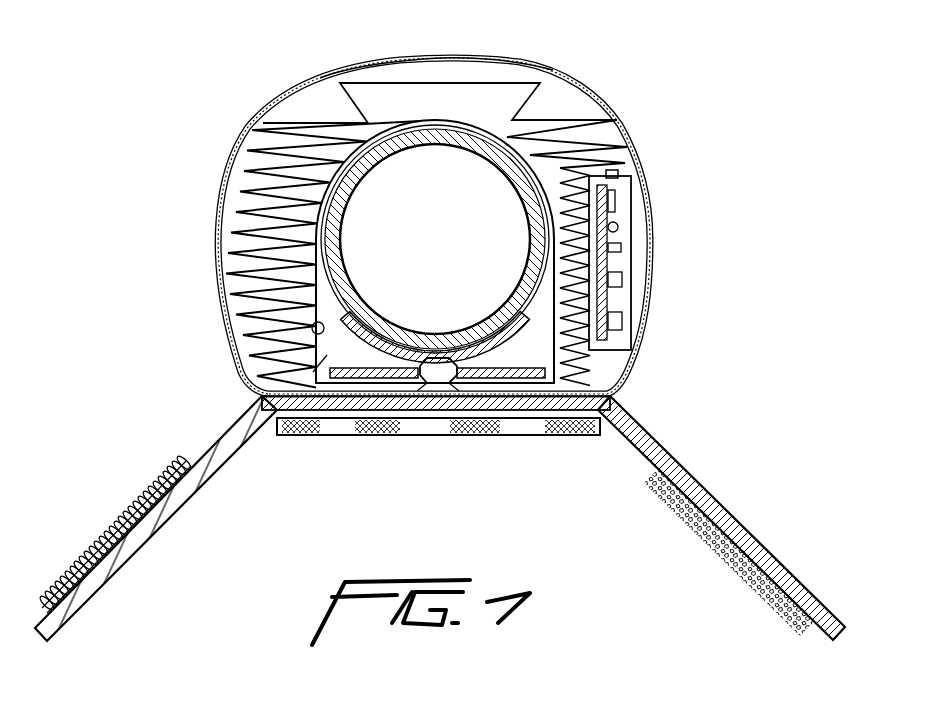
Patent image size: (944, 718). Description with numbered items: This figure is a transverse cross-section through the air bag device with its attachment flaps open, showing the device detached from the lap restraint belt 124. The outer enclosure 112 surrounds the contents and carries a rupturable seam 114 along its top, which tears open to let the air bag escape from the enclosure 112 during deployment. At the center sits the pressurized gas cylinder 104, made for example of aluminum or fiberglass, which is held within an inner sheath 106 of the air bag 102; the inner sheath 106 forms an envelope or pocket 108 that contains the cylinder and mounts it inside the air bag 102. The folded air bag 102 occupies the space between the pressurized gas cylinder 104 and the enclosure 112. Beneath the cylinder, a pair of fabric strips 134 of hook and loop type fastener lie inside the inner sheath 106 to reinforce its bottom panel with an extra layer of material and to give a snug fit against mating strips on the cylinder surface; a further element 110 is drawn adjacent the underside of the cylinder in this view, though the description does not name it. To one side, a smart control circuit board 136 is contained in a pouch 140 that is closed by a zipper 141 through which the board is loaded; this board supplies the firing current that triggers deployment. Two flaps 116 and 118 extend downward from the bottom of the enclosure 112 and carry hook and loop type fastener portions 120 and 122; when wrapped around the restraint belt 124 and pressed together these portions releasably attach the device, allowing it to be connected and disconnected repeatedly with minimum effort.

The air bag 102 is at (226, 186).
The pressurized gas cylinder 104 is at (452, 255).
The inner sheath 106 is at (232, 333).
The pocket 108 is at (258, 385).
The cradle 110 is at (531, 338).
The enclosure 112 is at (641, 130).
The rupturable seam 114 is at (436, 56).
The flap 116 is at (834, 606).
The flap 118 is at (63, 633).
The hook and loop type fastener portion 120 is at (726, 578).
The hook and loop type fastener portion 122 is at (97, 521).
The lap restraint belt 124 is at (440, 441).
The fabric strips 134 is at (369, 384).
The smart control circuit board 136 is at (618, 260).
The pouch 140 is at (632, 208).
The zipper 141 is at (614, 172).